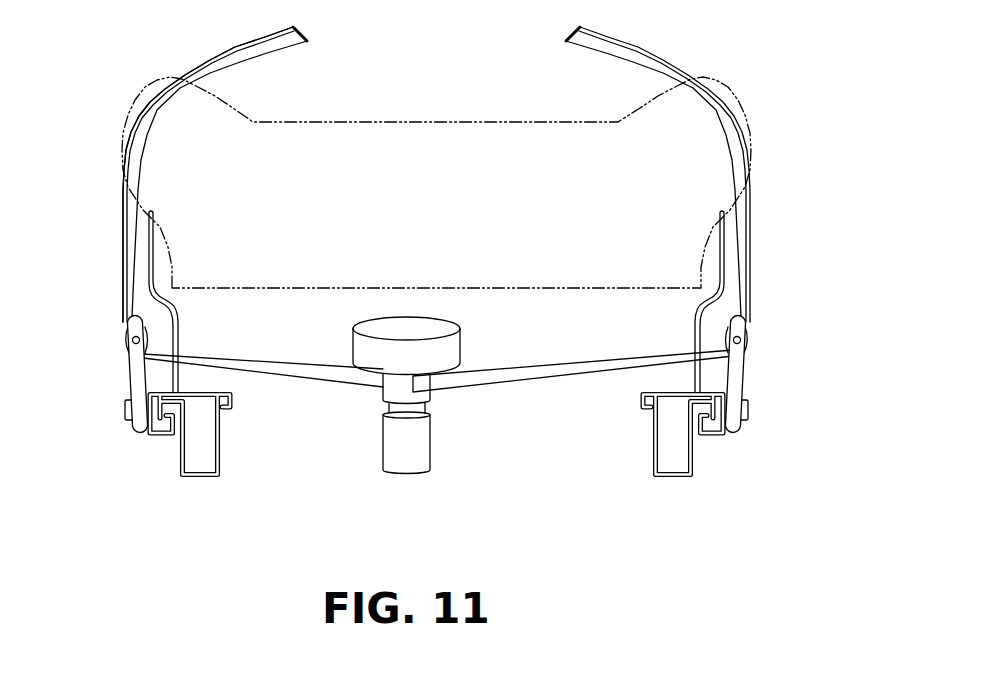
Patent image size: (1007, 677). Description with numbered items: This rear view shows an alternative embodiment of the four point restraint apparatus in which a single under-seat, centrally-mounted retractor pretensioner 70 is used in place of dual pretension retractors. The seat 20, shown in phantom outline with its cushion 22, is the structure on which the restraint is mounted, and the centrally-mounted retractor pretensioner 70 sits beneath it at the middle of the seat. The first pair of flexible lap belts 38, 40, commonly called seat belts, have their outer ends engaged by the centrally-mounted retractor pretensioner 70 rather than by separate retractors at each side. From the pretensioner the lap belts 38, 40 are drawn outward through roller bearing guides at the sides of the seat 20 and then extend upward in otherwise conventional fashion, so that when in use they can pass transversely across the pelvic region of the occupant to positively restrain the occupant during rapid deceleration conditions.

The seat 20 is at (137, 88).
The cushion 22 is at (425, 132).
The lap belt 38 is at (220, 62).
The lap belt 40 is at (642, 55).
The centrally-mounted retractor pretensioner 70 is at (427, 443).